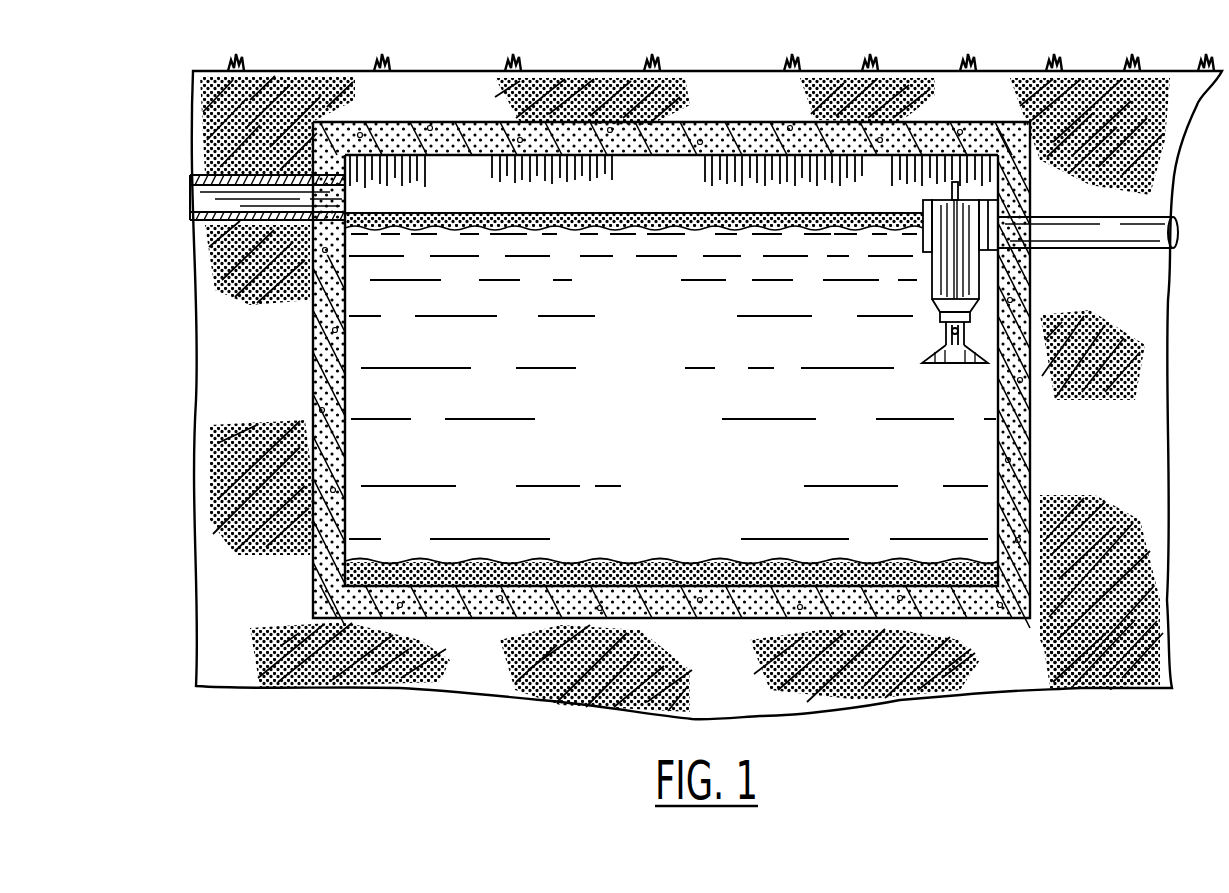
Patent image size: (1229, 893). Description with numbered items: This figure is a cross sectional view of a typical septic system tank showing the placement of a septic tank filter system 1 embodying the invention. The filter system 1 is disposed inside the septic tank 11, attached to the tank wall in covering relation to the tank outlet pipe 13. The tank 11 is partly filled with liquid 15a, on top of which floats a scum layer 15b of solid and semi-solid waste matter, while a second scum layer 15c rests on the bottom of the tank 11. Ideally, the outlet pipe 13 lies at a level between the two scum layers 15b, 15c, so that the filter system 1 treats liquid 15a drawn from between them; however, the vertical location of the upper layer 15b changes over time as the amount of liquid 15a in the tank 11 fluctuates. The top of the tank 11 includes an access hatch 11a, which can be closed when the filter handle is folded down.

The septic tank filter system 1 is at (927, 203).
The septic tank 11 is at (1025, 437).
The access hatch 11a is at (947, 137).
The tank outlet pipe 13 is at (1071, 230).
The liquid 15a is at (677, 327).
The scum layer 15b is at (505, 213).
The second scum layer 15c is at (720, 570).